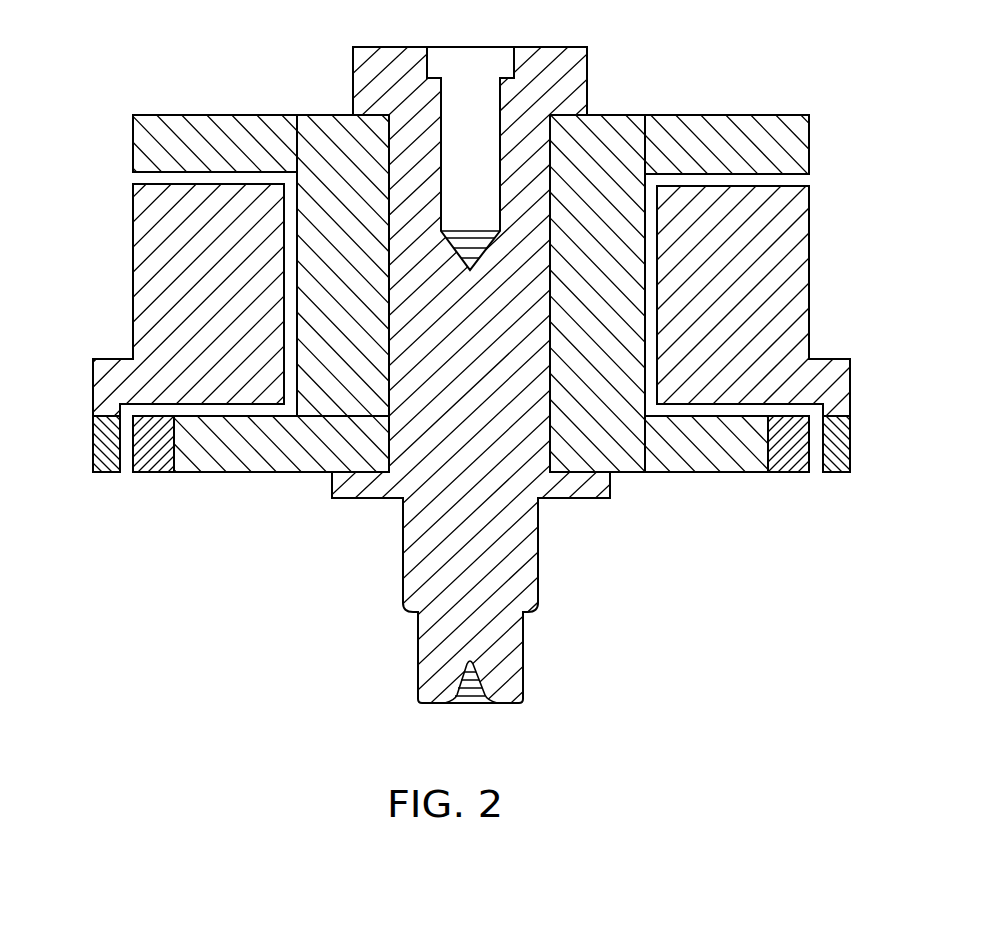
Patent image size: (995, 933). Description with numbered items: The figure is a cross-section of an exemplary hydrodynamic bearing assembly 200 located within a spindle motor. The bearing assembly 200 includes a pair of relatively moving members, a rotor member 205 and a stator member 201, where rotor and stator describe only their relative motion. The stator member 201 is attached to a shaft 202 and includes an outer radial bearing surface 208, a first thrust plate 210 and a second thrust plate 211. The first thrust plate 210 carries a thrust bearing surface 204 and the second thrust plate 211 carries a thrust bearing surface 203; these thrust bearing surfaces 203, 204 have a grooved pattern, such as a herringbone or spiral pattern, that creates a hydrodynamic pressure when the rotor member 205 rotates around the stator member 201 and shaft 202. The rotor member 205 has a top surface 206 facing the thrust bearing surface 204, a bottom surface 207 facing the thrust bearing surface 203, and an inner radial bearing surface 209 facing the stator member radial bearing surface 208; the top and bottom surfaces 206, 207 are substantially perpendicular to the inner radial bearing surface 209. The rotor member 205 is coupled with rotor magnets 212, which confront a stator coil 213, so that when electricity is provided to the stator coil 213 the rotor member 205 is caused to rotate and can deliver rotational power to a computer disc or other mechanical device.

The hydrodynamic bearing assembly 200 is at (210, 649).
The stator member 201 is at (247, 472).
The shaft 202 is at (540, 557).
The thrust bearing surface 203 is at (743, 416).
The thrust bearing surface 204 is at (740, 177).
The rotor member 205 is at (808, 273).
The top surface 206 is at (802, 185).
The bottom surface 207 is at (697, 405).
The outer radial bearing surface 208 is at (298, 280).
The inner radial bearing surface 209 is at (284, 242).
The first thrust plate 210 is at (188, 120).
The second thrust plate 211 is at (228, 460).
The rotor magnets 212 is at (102, 467).
The stator coil 213 is at (155, 452).